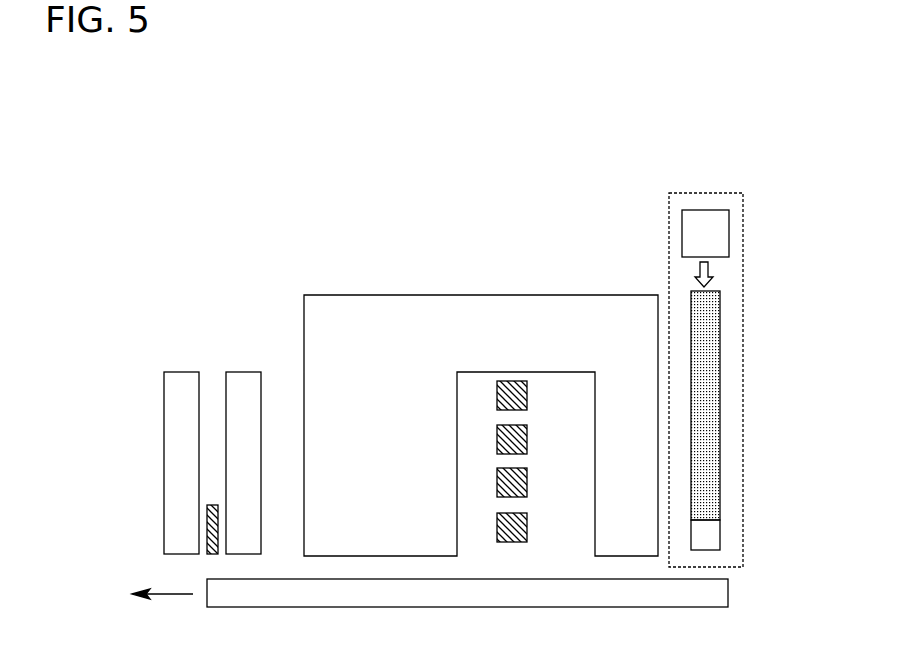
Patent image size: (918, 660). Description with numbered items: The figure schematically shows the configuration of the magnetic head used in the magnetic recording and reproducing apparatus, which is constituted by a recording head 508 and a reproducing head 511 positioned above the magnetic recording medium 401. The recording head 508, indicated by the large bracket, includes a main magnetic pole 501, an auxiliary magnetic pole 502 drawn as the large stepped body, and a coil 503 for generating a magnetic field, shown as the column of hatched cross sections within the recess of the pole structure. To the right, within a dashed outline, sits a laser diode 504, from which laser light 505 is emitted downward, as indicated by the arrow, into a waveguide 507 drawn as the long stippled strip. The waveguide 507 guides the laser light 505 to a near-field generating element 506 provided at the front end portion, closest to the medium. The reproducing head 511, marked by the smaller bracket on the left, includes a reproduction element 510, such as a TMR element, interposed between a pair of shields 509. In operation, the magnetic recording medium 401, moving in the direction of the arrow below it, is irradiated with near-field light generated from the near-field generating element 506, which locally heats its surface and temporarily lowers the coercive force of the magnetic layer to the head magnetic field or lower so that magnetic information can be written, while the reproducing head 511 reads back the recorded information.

The magnetic recording medium 401 is at (710, 592).
The main magnetic pole 501 is at (623, 500).
The auxiliary magnetic pole 502 is at (383, 484).
The coil 503 is at (515, 393).
The laser diode 504 is at (722, 233).
The laser light 505 is at (713, 276).
The near-field generating element 506 is at (710, 537).
The waveguide 507 is at (710, 325).
The recording head 508 is at (744, 178).
The shields 509 is at (183, 385).
The reproduction element 510 is at (210, 530).
The reproducing head 511 is at (268, 302).